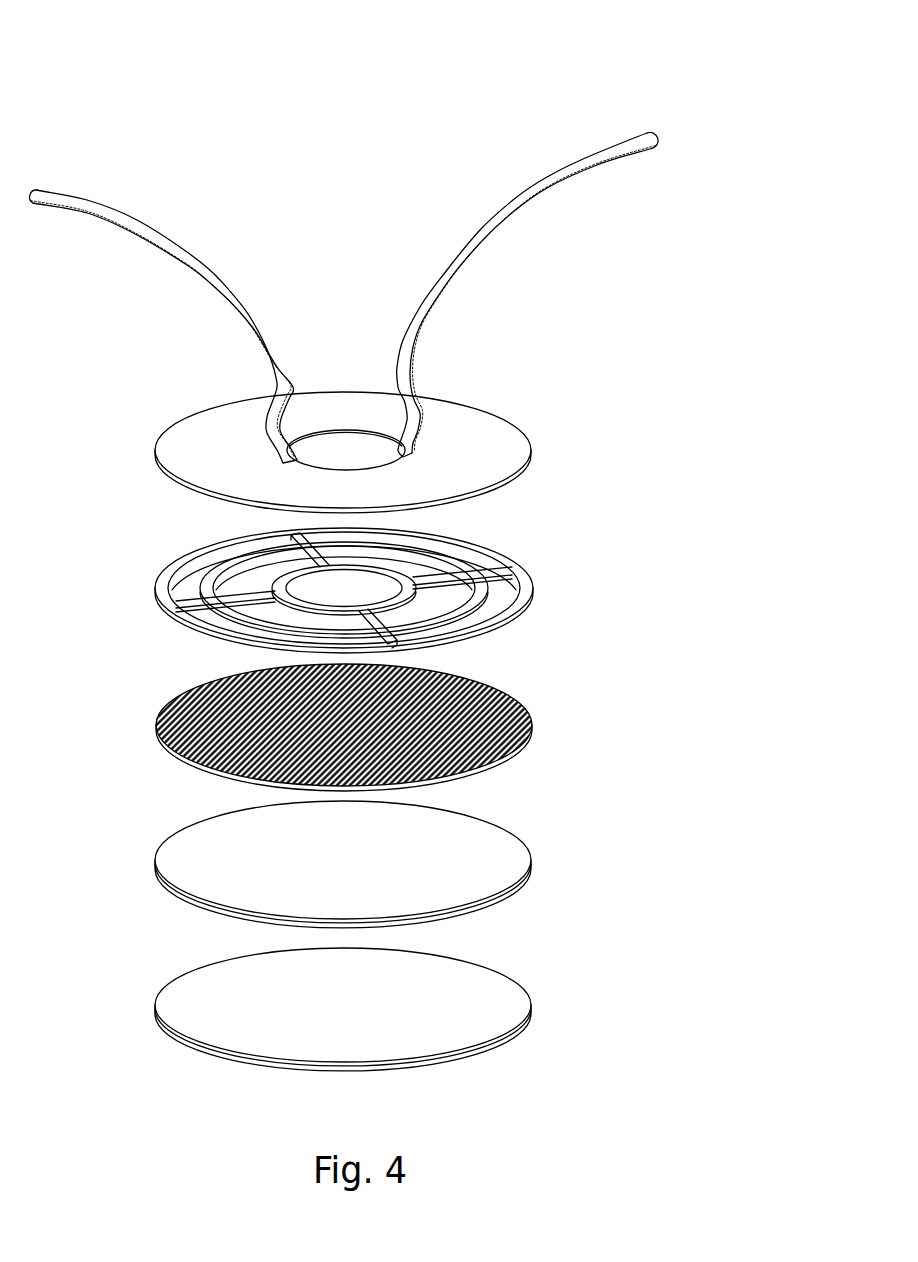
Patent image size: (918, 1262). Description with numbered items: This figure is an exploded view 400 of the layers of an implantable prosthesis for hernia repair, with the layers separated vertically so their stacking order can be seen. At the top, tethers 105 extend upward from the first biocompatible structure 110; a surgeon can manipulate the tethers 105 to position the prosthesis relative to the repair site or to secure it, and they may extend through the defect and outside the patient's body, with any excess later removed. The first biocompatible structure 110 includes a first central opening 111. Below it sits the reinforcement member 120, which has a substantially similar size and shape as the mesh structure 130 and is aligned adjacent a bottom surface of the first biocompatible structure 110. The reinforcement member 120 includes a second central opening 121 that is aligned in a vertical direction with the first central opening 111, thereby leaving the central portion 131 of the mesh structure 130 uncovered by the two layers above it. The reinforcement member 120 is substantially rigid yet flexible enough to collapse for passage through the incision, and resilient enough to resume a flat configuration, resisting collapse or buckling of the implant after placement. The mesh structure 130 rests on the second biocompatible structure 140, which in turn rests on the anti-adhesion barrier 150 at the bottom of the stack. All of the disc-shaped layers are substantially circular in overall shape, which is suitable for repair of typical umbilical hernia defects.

The exploded view 400 is at (673, 67).
The tether 105 is at (600, 180).
The first biocompatible structure 110 is at (396, 428).
The first central opening 111 is at (323, 452).
The reinforcement member 120 is at (380, 582).
The second central opening 121 is at (330, 588).
The mesh structure 130 is at (376, 718).
The central portion of mesh 131 is at (230, 677).
The second biocompatible structure 140 is at (518, 862).
The anti-adhesion barrier 150 is at (518, 1008).